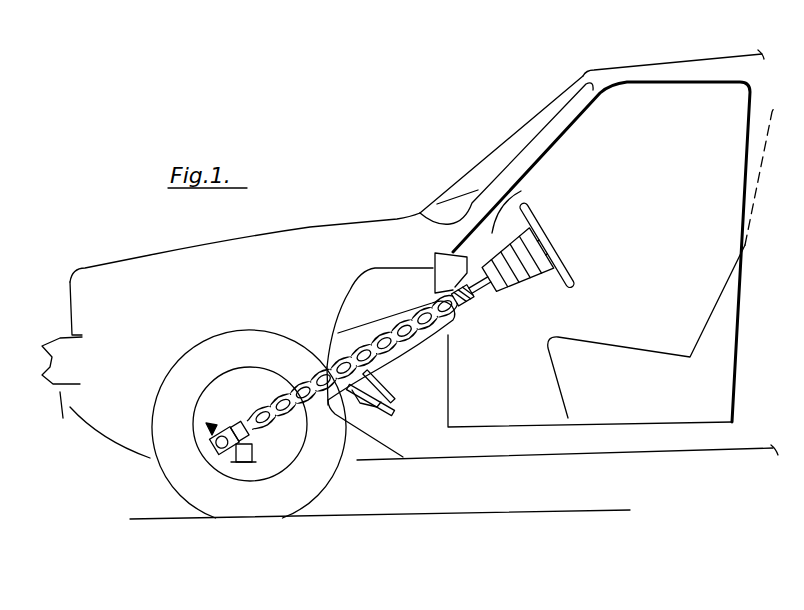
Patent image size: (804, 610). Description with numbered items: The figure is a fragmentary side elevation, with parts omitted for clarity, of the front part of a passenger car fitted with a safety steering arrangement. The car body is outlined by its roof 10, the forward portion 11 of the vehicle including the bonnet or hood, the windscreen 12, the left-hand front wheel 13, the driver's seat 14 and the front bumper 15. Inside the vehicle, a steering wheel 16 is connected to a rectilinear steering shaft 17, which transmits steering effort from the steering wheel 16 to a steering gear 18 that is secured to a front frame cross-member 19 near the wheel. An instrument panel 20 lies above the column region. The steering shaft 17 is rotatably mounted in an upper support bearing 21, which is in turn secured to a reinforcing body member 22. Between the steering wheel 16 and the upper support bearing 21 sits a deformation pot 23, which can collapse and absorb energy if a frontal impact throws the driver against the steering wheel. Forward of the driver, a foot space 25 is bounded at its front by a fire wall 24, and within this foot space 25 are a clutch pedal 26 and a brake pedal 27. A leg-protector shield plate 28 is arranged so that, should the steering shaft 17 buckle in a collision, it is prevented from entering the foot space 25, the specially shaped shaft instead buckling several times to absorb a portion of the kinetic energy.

The roof 10 is at (693, 70).
The forward portion of a motor vehicle 11 is at (311, 226).
The windscreen 12 is at (480, 173).
The left-hand front wheel 13 is at (182, 472).
The driver's seat 14 is at (664, 367).
The front bumper 15 is at (68, 339).
The steering wheel 16 is at (563, 274).
The rectilinear steering shaft 17 is at (282, 396).
The steering gear 18 is at (212, 427).
The front frame cross-member 19 is at (253, 450).
The instrument panel 20 is at (523, 205).
The upper support bearing 21 is at (462, 301).
The reinforcing body member 22 is at (434, 280).
The deformation pot 23 is at (522, 280).
The fire wall 24 is at (388, 449).
The foot space 25 is at (392, 389).
The clutch pedal 26 is at (398, 391).
The brake pedal 27 is at (381, 407).
The leg-protector shield plate 28 is at (450, 346).